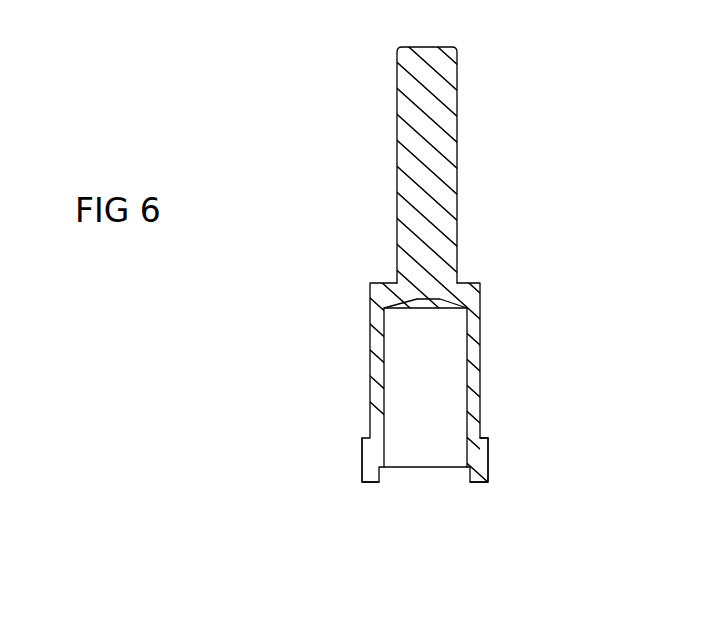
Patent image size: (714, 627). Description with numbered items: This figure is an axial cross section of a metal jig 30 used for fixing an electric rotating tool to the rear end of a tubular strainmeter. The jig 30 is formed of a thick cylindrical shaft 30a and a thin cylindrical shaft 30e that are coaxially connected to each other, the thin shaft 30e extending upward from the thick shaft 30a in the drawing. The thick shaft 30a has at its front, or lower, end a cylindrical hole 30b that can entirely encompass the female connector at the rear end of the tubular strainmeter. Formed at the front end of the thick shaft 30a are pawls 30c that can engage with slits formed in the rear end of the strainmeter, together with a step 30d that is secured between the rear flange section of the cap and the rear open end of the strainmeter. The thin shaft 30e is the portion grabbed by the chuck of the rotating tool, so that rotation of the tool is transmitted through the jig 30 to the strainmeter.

The jig 30 is at (438, 286).
The thick cylindrical shaft 30a is at (481, 360).
The cylindrical hole 30b is at (427, 450).
The pawls 30c is at (362, 480).
The step 30d is at (483, 438).
The thin cylindrical shaft 30e is at (452, 103).